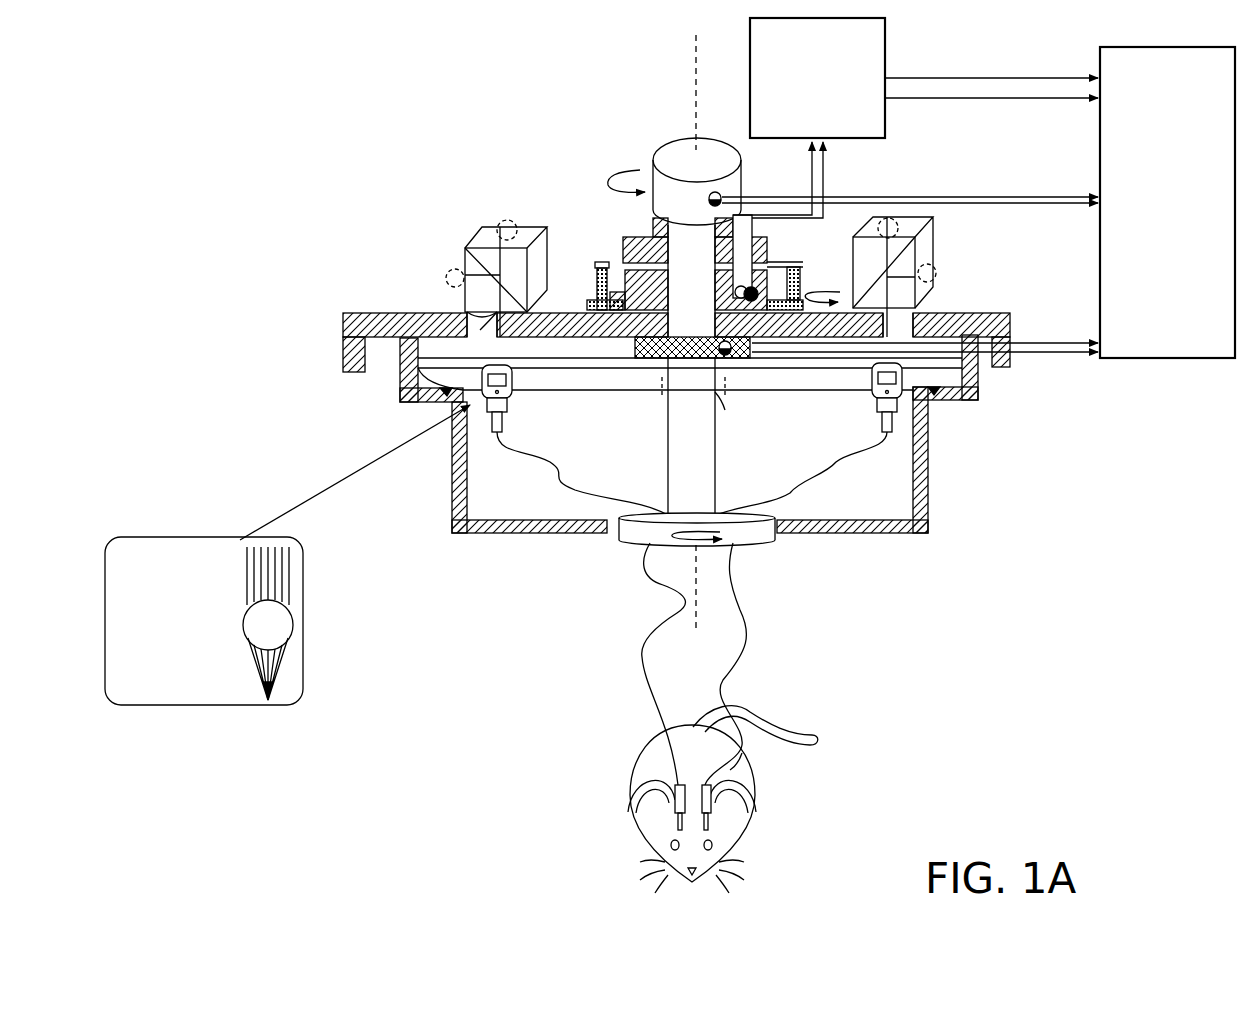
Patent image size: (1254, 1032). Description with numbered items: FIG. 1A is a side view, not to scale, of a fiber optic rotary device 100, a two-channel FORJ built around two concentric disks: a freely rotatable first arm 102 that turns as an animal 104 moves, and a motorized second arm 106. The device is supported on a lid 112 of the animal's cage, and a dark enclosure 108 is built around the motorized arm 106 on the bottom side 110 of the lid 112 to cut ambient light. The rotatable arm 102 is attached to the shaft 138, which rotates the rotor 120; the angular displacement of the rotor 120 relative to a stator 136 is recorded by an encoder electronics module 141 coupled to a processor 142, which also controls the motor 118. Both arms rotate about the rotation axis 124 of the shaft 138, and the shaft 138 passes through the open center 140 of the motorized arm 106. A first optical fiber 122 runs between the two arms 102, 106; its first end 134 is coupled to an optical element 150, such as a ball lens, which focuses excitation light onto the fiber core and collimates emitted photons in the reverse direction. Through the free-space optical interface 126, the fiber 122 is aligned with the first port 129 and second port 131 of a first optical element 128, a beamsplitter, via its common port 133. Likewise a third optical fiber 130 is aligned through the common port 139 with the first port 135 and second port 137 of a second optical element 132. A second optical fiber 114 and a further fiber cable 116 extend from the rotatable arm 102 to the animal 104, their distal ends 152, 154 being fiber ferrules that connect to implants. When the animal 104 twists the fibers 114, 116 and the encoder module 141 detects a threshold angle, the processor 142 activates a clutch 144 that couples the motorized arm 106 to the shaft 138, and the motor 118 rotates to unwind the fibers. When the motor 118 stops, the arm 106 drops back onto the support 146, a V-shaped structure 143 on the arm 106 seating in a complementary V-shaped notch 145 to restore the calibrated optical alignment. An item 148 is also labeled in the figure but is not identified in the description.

The fiber optic rotary device 100 is at (265, 130).
The freely rotatable arm 102 is at (615, 538).
The animal 104 is at (693, 885).
The motorized arm 106 is at (418, 375).
The dark enclosure 108 is at (452, 490).
The bottom side 110 is at (440, 339).
The lid 112 is at (343, 328).
The second optical fiber 114 is at (645, 672).
The optical fiber cable 116 is at (753, 652).
The motor 118 is at (672, 143).
The rotor 120 is at (634, 237).
The first optical fiber 122 is at (548, 458).
The rotation axis 124 is at (697, 582).
The free-space optical interface 126 is at (515, 327).
The first optical element 128 is at (475, 235).
The first port 129 is at (445, 275).
The third optical fiber 130 is at (832, 473).
The second port 131 is at (505, 219).
The second optical element 132 is at (930, 240).
The common port 133 is at (465, 312).
The first end 134 is at (505, 433).
The first port 135 is at (937, 277).
The stator 136 is at (622, 280).
The second port 137 is at (887, 222).
The shaft 138 is at (667, 415).
The common port 139 is at (887, 315).
The open center 140 is at (725, 395).
The encoder electronics module 141 is at (924, 78).
The processor 142 is at (1167, 202).
The V-shaped structure 143 is at (950, 388).
The clutch 144 is at (630, 348).
The V-shaped notch 145 is at (938, 393).
The support 146 is at (967, 402).
The light beam 148 is at (477, 263).
The optical element 150 is at (347, 473).
The distal end 152 is at (680, 798).
The distal end 154 is at (707, 798).